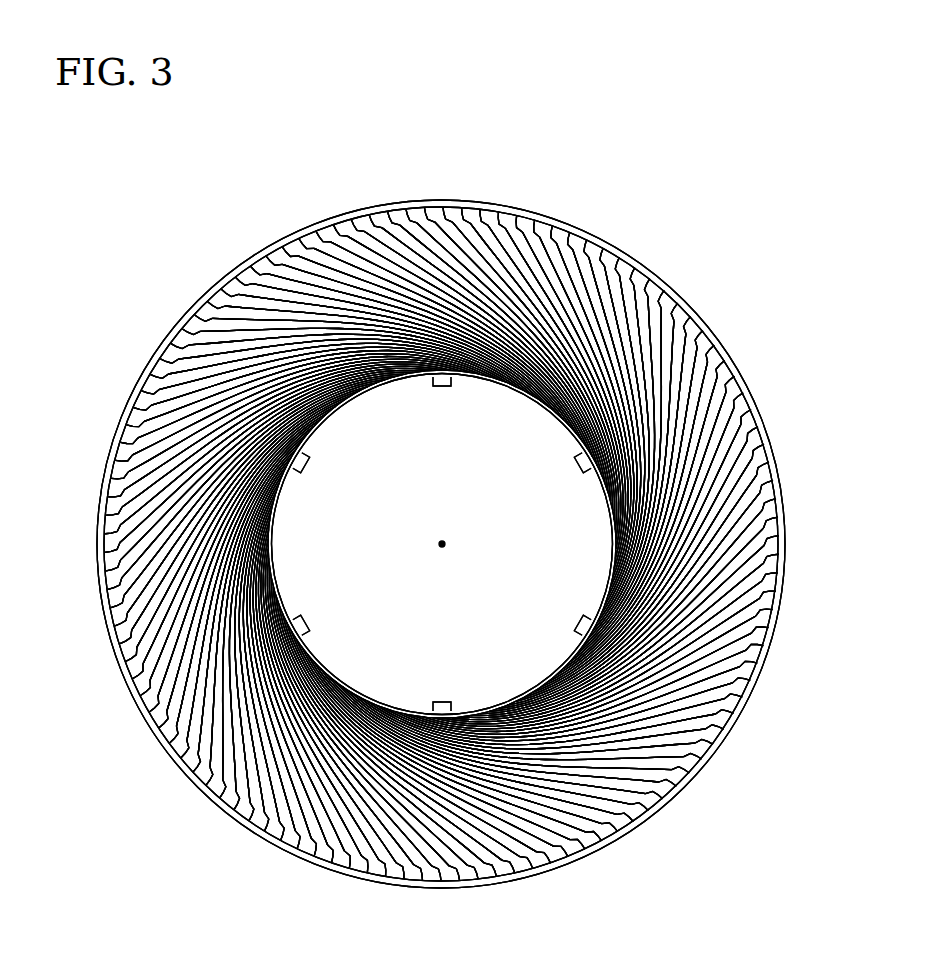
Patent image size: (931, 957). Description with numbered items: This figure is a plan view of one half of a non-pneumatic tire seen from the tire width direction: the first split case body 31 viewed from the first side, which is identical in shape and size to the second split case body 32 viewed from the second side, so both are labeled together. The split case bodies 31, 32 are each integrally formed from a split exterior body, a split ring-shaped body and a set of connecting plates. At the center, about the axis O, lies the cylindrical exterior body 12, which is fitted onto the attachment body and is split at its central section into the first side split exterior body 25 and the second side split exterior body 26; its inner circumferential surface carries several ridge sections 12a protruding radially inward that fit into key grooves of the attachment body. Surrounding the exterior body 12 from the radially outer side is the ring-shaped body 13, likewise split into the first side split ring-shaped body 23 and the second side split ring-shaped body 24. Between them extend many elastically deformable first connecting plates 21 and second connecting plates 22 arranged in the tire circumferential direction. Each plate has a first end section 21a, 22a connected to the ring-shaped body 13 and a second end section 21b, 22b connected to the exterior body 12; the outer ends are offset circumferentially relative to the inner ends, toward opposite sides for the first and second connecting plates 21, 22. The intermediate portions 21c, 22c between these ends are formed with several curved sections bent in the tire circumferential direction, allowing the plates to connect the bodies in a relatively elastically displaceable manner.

The exterior body 12 is at (539, 385).
The ridge section 12a is at (304, 626).
The ring-shaped body 13 is at (601, 207).
The first connecting plate 21 is at (185, 377).
The second connecting plate 22 is at (185, 377).
The first end section of the first connecting plate 21a is at (401, 212).
The first end section of the second connecting plate 22a is at (401, 212).
The second end section of the first connecting plate 21b is at (492, 375).
The second end section of the second connecting plate 22b is at (492, 375).
The intermediate portion of the first connecting plate 21c is at (293, 303).
The intermediate portion of the second connecting plate 22c is at (293, 303).
The first side split ring-shaped body 23 is at (628, 253).
The second side split ring-shaped body 24 is at (628, 253).
The first side split exterior body 25 is at (562, 410).
The second side split exterior body 26 is at (562, 410).
The first split case body 31 is at (490, 104).
The second split case body 32 is at (490, 104).
The center axis O is at (447, 540).